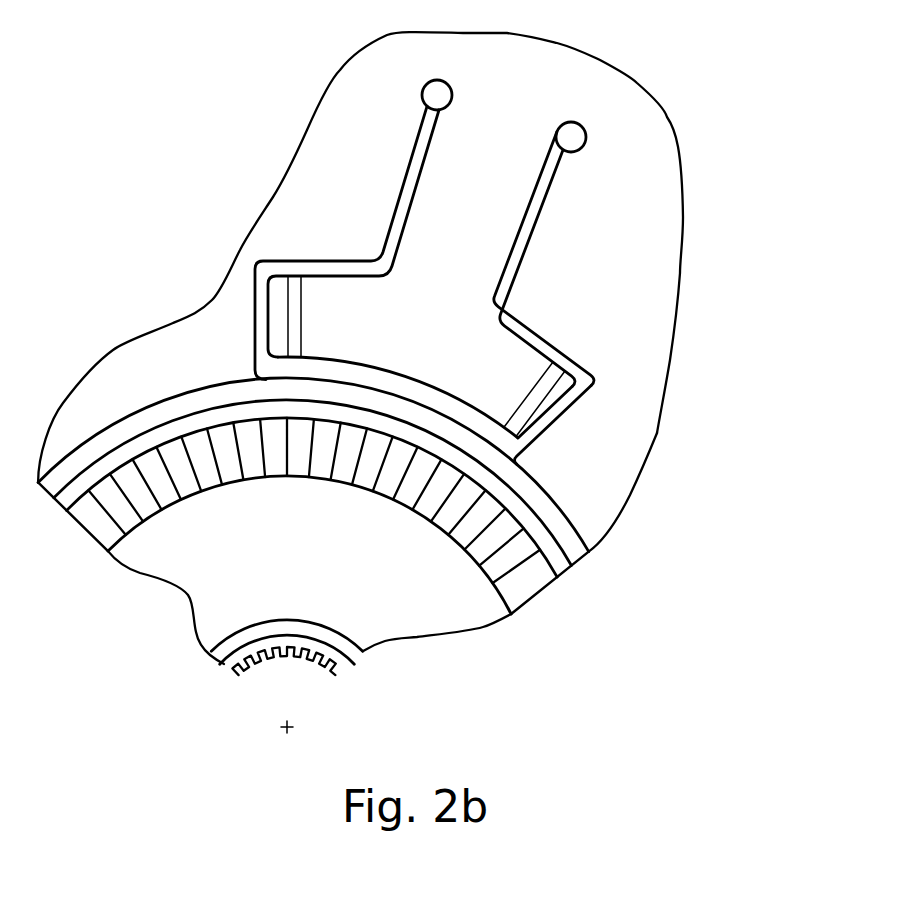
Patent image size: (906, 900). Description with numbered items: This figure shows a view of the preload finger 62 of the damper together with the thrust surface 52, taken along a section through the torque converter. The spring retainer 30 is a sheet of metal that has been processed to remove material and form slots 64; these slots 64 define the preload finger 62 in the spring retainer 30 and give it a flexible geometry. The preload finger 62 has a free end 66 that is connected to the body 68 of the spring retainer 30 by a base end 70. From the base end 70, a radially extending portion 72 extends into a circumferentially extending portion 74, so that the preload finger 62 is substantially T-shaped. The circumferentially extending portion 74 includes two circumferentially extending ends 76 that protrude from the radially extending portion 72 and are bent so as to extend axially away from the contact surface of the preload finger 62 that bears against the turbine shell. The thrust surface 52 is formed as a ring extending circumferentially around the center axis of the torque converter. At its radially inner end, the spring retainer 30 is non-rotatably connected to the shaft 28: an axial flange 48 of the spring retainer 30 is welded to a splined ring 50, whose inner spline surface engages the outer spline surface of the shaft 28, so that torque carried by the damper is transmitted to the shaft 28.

The base end 70 is at (550, 107).
The body of spring retainer 68 is at (518, 80).
The radially extending portion 72 is at (498, 193).
The circumferentially extending portion 74 is at (443, 348).
The free end 66 is at (563, 453).
The preload finger 62 is at (490, 230).
The slots 64 is at (597, 373).
The circumferentially extending ends 76 is at (272, 320).
The spring retainer 30 is at (453, 622).
The thrust surface 52 is at (523, 577).
The axial flange 48 is at (213, 655).
The splined ring 50 is at (230, 663).
The shaft 28 is at (258, 692).
The rotation axis A is at (290, 727).